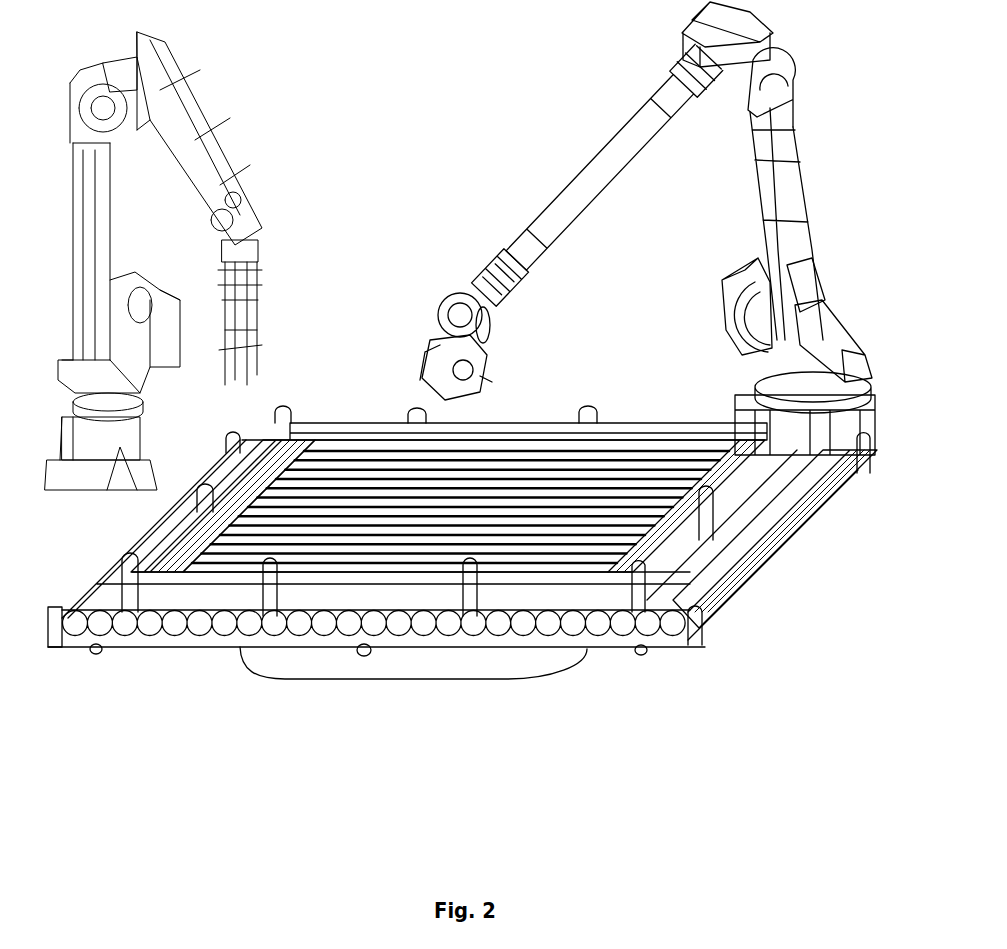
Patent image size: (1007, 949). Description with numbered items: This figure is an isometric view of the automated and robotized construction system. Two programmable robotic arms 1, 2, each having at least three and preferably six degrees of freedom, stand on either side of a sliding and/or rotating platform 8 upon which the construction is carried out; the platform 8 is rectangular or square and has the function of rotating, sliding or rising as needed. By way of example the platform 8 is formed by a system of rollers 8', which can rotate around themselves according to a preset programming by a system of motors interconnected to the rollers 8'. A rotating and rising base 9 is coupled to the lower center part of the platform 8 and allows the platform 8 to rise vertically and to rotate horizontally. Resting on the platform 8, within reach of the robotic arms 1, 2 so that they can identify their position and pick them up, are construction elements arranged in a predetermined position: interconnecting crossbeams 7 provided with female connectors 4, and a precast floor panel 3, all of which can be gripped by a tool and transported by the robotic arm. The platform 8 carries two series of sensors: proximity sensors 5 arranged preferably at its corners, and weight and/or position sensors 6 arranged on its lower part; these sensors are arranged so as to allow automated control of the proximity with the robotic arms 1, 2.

The programmable robotic arm 1 is at (229, 122).
The programmable robotic arm 2 is at (587, 183).
The precast floor panel 3 is at (365, 470).
The female connector 4 is at (288, 405).
The proximity sensor 5 is at (702, 638).
The weight and/or position sensor 6 is at (355, 658).
The interconnecting crossbeam 7 is at (513, 432).
The sliding and/or rotating platform 8 is at (223, 487).
The rollers 8' is at (765, 539).
The rotating and rising base 9 is at (500, 667).